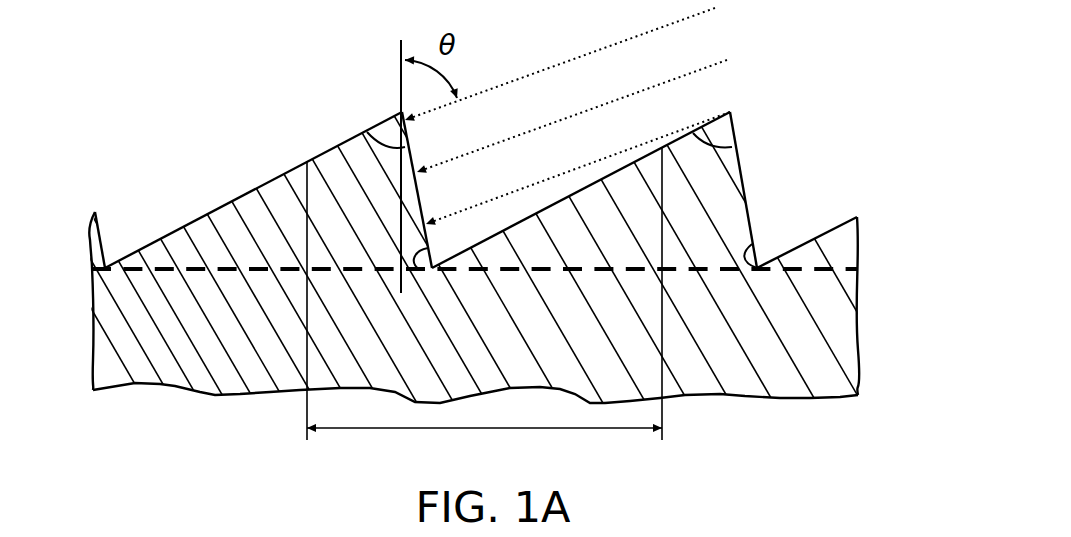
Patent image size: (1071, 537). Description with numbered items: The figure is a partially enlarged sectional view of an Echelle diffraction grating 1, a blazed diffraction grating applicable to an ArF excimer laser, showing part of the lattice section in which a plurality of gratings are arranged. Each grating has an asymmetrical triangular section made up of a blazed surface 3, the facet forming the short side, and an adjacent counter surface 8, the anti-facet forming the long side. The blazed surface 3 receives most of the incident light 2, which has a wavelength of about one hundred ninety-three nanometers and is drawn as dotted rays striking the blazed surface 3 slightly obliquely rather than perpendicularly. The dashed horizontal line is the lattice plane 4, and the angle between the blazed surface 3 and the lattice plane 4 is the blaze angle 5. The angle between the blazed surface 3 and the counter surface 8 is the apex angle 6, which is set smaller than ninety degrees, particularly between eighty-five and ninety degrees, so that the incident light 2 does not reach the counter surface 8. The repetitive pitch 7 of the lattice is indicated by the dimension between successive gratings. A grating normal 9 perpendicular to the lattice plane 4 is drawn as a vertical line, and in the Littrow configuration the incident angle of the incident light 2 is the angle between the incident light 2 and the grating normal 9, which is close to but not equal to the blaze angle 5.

The Echelle diffraction grating 1 is at (229, 80).
The incident light 2 is at (593, 162).
The blazed surface 3 is at (413, 160).
The lattice plane 4 is at (140, 272).
The blaze angle 5 is at (418, 252).
The apex angle 6 is at (403, 147).
The repetitive pitch 7 is at (484, 306).
The counter surface 8 is at (215, 203).
The grating normal 9 is at (401, 150).